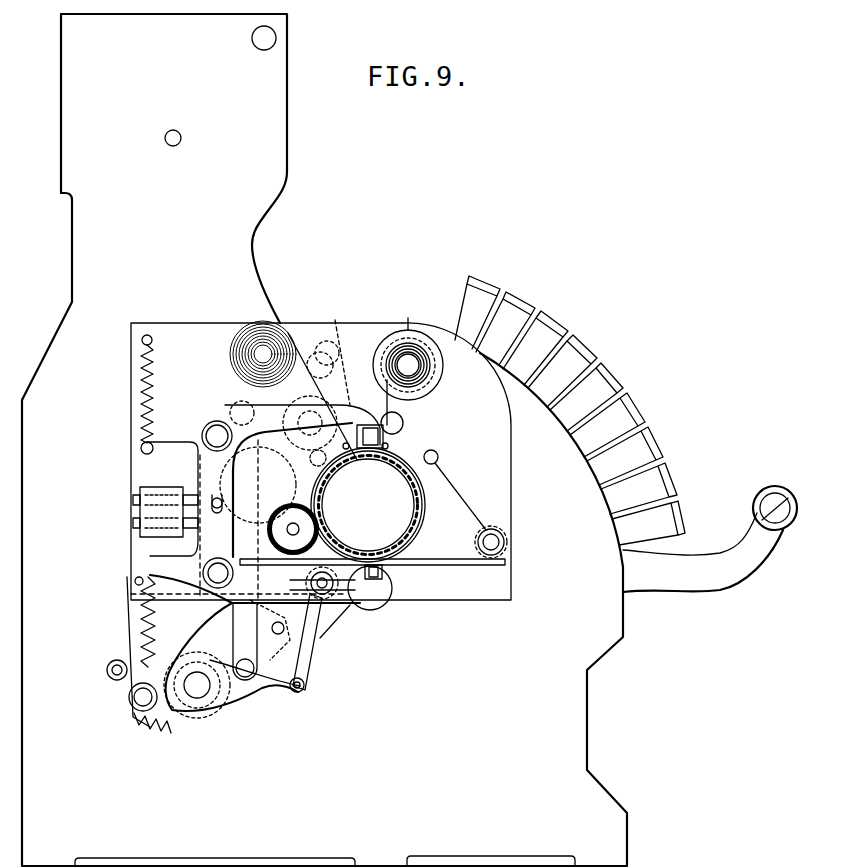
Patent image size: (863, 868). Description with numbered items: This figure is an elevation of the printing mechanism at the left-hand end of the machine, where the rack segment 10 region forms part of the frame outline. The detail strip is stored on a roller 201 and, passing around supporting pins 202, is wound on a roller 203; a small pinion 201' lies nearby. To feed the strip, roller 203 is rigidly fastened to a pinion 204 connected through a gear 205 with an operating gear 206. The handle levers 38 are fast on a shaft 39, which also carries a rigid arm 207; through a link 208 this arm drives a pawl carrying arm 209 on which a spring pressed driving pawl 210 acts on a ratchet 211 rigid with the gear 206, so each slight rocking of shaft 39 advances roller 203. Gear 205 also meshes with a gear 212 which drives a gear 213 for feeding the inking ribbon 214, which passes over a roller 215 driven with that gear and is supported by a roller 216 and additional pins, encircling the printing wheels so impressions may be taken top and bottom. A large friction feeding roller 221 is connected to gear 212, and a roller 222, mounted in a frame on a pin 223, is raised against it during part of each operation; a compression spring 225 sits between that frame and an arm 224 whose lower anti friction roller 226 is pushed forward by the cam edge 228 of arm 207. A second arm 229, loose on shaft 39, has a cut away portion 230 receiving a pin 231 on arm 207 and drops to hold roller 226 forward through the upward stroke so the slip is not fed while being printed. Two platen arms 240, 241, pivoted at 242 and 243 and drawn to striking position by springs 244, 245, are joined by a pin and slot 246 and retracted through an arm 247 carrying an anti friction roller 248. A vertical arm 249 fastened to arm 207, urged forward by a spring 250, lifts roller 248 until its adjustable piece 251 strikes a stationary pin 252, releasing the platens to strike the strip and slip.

The rack segment 10 is at (600, 366).
The handle levers 38 is at (750, 546).
The shaft 39 is at (197, 700).
The roller 201 is at (257, 343).
The pinion 201' is at (316, 351).
The supporting pins 202 is at (368, 505).
The roller 203 is at (408, 362).
The pinion 204 is at (432, 385).
The gear 205 is at (432, 435).
The operating gear 206 is at (298, 468).
The arm 207 is at (230, 710).
The link 208 is at (255, 488).
The pawl carrying arm 209 is at (250, 403).
The driving pawl 210 is at (340, 330).
The ratchet 211 is at (425, 503).
The gear 212 is at (400, 540).
The gear 213 is at (316, 467).
The inking ribbon 214 is at (470, 500).
The roller 215 is at (293, 529).
The roller 216 is at (504, 543).
The friction feeding roller 221 is at (425, 518).
The roller 222 is at (385, 605).
The pin 223 is at (340, 610).
The arm 224 is at (316, 660).
The compression spring 225 is at (323, 640).
The anti friction roller 226 is at (302, 690).
The cam edge 228 is at (314, 676).
The arm 229 is at (285, 720).
The cut away portion 230 is at (262, 638).
The pin 231 is at (272, 626).
The platen arm 240 is at (395, 595).
The platen arm 241 is at (345, 365).
The pivot 242 is at (203, 572).
The pivot 243 is at (210, 430).
The spring 244 is at (140, 599).
The spring 245 is at (155, 385).
The pin and slot 246 is at (216, 497).
The arm 247 is at (253, 528).
The anti friction roller 248 is at (134, 580).
The vertical arm 249 is at (122, 626).
The spring 250 is at (150, 732).
The adjustable piece 251 is at (108, 664).
The stationary pin 252 is at (150, 622).